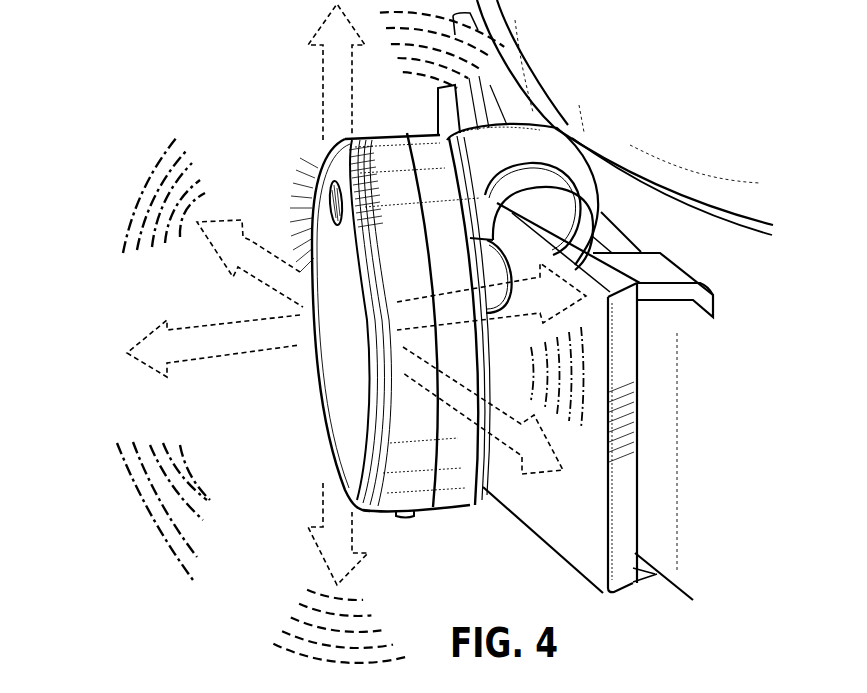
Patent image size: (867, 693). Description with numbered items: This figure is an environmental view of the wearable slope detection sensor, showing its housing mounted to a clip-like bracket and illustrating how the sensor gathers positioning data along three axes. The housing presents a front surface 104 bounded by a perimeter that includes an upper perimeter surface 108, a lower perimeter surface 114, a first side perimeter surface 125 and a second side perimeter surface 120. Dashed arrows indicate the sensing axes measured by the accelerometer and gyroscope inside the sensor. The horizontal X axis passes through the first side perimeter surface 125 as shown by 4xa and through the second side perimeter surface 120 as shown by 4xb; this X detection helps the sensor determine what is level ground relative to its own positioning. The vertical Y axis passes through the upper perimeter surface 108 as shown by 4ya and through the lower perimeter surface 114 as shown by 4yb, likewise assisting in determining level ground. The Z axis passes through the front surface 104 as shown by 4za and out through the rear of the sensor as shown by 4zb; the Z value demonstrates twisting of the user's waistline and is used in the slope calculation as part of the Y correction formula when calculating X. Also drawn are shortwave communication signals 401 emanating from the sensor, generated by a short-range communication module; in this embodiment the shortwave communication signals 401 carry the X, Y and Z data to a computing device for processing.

The front surface 104 is at (343, 426).
The upper perimeter surface 108 is at (374, 144).
The lower perimeter surface 114 is at (388, 513).
The second side perimeter surface 120 is at (312, 165).
The first side perimeter surface 125 is at (407, 258).
The shortwave communication signals 401 is at (128, 203).
The Y axis through upper perimeter surface 4ya is at (330, 97).
The Y axis through lower perimeter surface 4yb is at (323, 520).
The X axis through first side perimeter surface 4xa is at (253, 246).
The X axis through second side perimeter surface 4xb is at (514, 447).
The Z axis through front surface 4za is at (240, 347).
The Z axis through rear surface 4zb is at (584, 296).